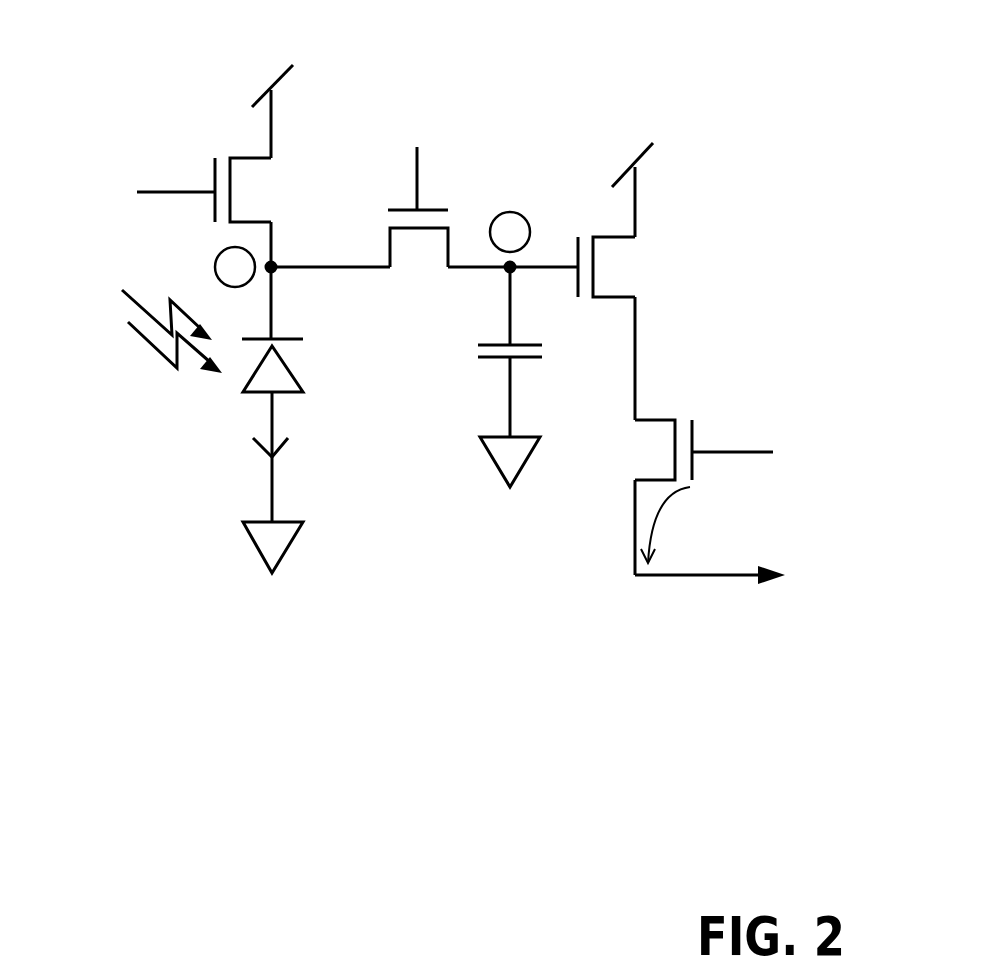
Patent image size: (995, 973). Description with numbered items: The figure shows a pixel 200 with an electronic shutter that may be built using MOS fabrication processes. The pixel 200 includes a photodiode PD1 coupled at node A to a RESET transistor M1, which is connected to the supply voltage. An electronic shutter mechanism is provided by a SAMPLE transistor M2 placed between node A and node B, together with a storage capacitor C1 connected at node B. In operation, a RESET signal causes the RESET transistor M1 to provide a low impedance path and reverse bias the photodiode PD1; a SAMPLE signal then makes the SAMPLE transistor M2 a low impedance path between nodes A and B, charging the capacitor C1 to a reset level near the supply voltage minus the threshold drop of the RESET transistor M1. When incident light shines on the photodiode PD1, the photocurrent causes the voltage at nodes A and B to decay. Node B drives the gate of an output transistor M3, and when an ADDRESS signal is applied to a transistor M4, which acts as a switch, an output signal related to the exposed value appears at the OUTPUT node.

The pixel 200 is at (604, 67).
The RESET transistor M1 is at (210, 190).
The SAMPLE transistor M2 is at (418, 210).
The output transistor M3 is at (613, 267).
The transistor M4 is at (701, 450).
The photodiode PD1 is at (304, 376).
The storage capacitor C1 is at (530, 352).